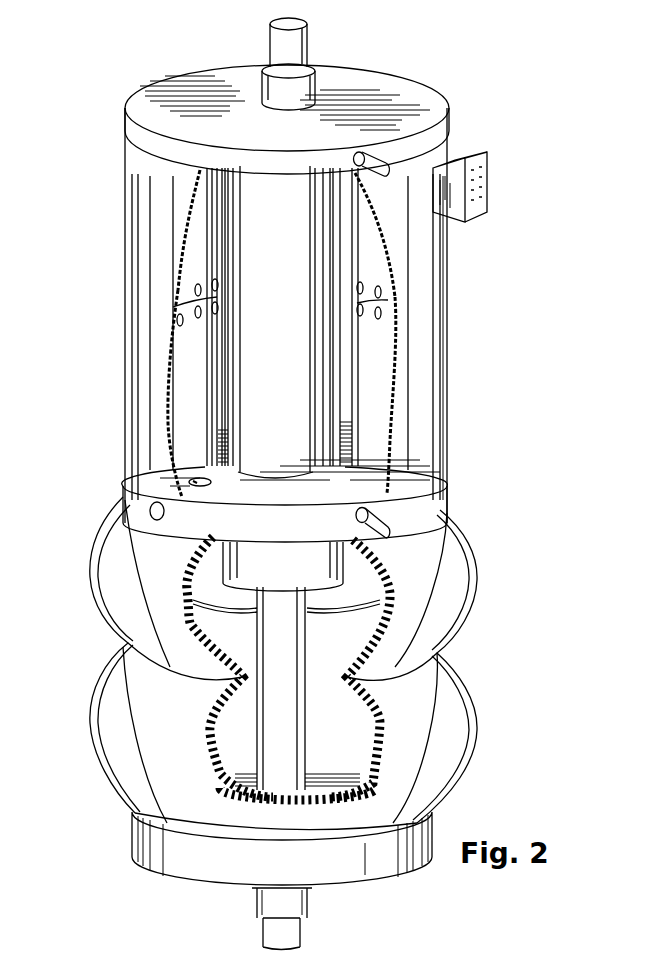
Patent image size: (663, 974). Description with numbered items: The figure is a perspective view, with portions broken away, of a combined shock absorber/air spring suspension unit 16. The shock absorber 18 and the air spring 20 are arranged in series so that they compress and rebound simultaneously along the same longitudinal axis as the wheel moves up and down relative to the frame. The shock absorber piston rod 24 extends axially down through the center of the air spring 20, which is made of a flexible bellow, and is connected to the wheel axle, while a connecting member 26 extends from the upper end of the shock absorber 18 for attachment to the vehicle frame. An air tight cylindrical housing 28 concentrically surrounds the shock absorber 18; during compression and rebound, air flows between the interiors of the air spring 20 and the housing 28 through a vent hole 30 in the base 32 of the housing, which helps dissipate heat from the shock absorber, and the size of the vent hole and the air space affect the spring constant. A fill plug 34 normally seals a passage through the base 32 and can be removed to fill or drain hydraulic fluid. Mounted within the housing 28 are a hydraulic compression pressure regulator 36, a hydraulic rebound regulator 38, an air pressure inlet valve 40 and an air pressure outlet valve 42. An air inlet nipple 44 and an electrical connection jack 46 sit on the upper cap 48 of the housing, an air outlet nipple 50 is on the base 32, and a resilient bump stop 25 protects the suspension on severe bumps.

The filter apparatus 16 is at (468, 476).
The shock absorber 18 is at (328, 371).
The air spring 20 is at (462, 618).
The shock absorber piston rod 24 is at (293, 625).
The resilient bump stop 25 is at (245, 557).
The connecting member 26 is at (293, 52).
The cylindrical housing 28 is at (137, 322).
The vent hole 30 is at (187, 479).
The base 32 is at (433, 495).
The fill plug 34 is at (150, 513).
The hydraulic compression pressure regulator 36 is at (207, 243).
The hydraulic rebound regulator 38 is at (187, 367).
The air pressure inlet valve 40 is at (377, 253).
The air pressure outlet valve 42 is at (377, 400).
The air inlet nipple 44 is at (380, 151).
The electrical connection jack 46 is at (462, 158).
The upper cap 48 is at (125, 124).
The air outlet nipple 50 is at (387, 533).